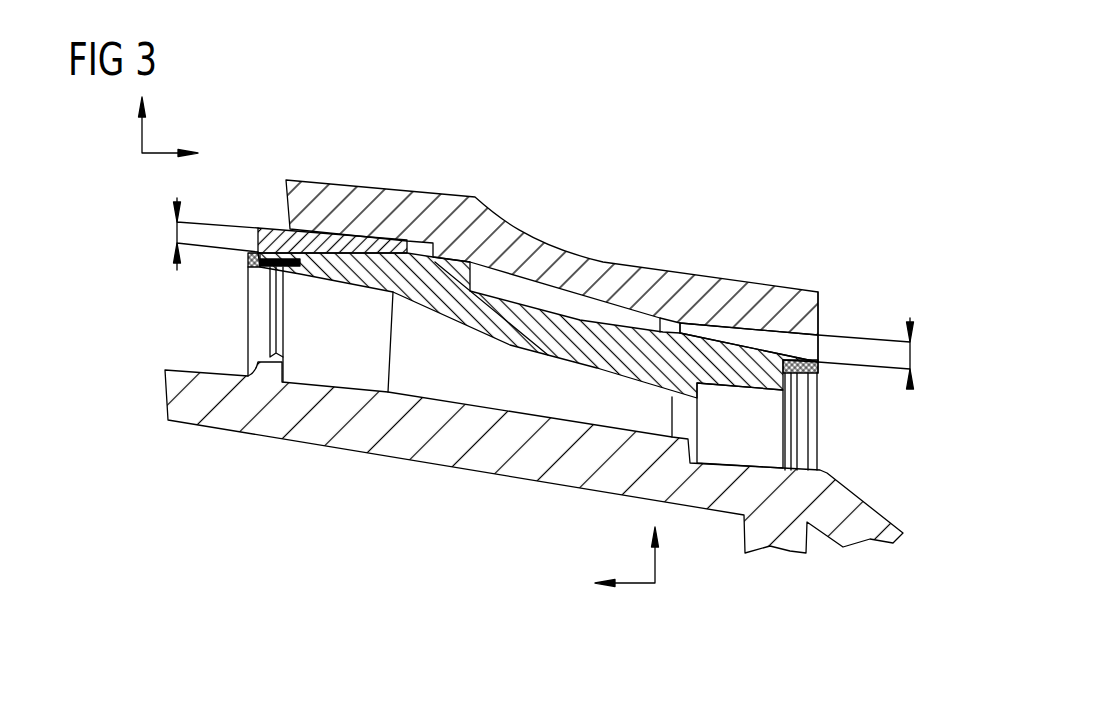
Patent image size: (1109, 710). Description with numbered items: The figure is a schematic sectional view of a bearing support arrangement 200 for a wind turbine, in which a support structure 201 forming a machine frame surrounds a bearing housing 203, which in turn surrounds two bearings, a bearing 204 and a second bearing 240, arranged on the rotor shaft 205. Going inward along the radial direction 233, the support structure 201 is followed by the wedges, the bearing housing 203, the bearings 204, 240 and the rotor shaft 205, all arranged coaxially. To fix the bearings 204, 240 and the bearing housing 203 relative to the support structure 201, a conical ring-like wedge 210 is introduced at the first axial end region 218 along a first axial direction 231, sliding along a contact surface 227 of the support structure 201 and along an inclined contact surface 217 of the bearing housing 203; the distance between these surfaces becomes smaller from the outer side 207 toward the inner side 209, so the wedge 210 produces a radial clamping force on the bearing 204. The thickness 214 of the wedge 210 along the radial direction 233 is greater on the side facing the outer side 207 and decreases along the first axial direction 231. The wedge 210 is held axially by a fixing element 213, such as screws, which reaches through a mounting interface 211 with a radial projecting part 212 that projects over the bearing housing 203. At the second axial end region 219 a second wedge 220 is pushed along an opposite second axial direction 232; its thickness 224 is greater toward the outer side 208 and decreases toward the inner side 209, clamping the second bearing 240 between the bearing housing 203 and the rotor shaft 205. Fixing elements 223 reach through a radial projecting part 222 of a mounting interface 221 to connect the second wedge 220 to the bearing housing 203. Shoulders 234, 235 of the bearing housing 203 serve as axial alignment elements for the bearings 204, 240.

The bearing support arrangement 200 is at (902, 209).
The support structure 201 is at (457, 207).
The bearing housing 203 is at (638, 347).
The bearing 204 is at (338, 375).
The rotor shaft 205 is at (465, 458).
The outer side 207 is at (231, 171).
The outer side 208 is at (865, 287).
The inner side 209 is at (523, 338).
The wedge 210 is at (377, 243).
The mounting interface 211 is at (258, 272).
The radial projecting part 212 is at (285, 290).
The fixing element 213 is at (250, 262).
The thickness 214 is at (176, 235).
The contact surface 217 is at (345, 282).
The first axial end region 218 is at (278, 150).
The second axial end region 219 is at (842, 252).
The second wedge 220 is at (795, 330).
The mounting interface 221 is at (810, 376).
The radial projecting part 222 is at (758, 375).
The fixing elements 223 is at (821, 368).
The thickness 224 is at (912, 352).
The contact surface 227 is at (334, 210).
The first axial direction 231 is at (155, 154).
The second axial direction 232 is at (636, 584).
The radial direction 233 is at (142, 133).
The shoulder 234 is at (421, 297).
The shoulder 235 is at (693, 358).
The second bearing 240 is at (768, 452).